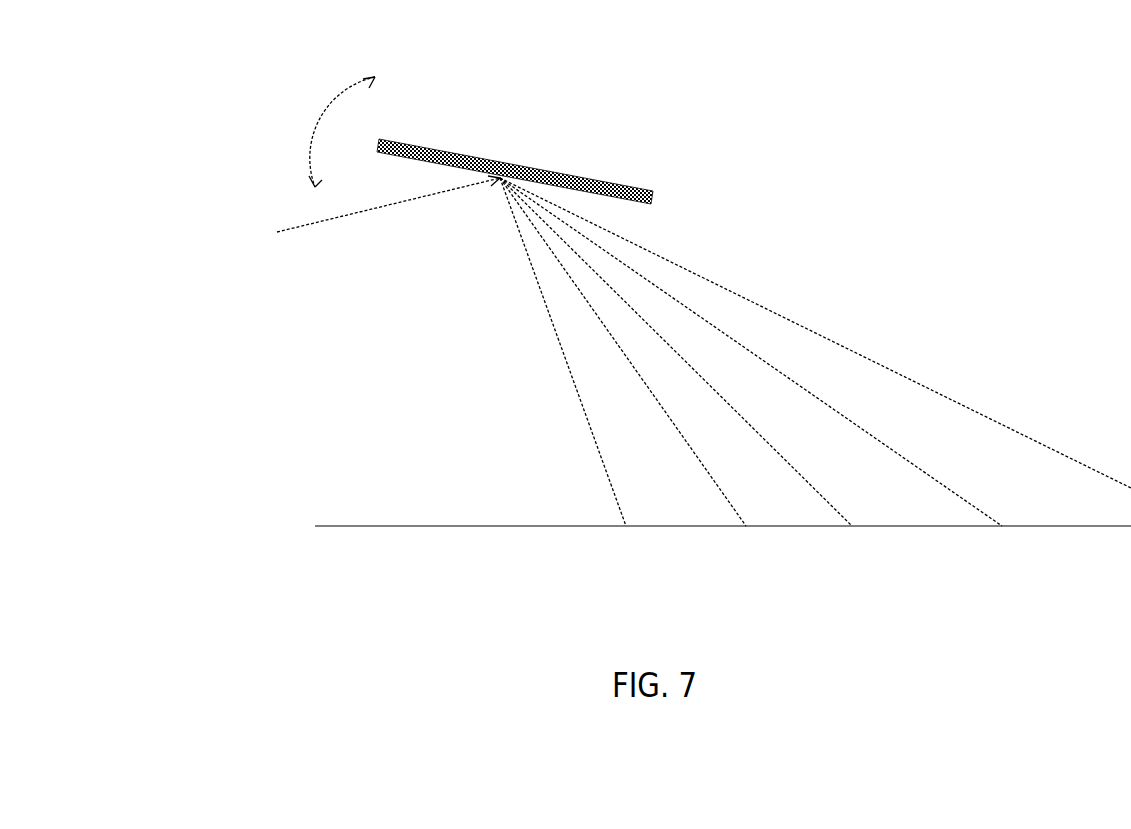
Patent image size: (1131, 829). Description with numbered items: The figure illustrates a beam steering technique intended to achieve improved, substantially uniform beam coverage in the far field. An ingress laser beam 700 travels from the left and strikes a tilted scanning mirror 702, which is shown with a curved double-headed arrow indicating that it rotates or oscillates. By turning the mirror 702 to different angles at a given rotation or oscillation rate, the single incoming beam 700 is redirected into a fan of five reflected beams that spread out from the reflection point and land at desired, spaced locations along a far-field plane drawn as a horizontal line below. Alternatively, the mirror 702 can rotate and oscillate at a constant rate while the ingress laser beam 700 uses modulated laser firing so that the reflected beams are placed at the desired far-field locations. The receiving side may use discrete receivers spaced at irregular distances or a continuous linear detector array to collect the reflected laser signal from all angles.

The ingress laser beam 700 is at (375, 210).
The scanning mirror 702 is at (425, 147).